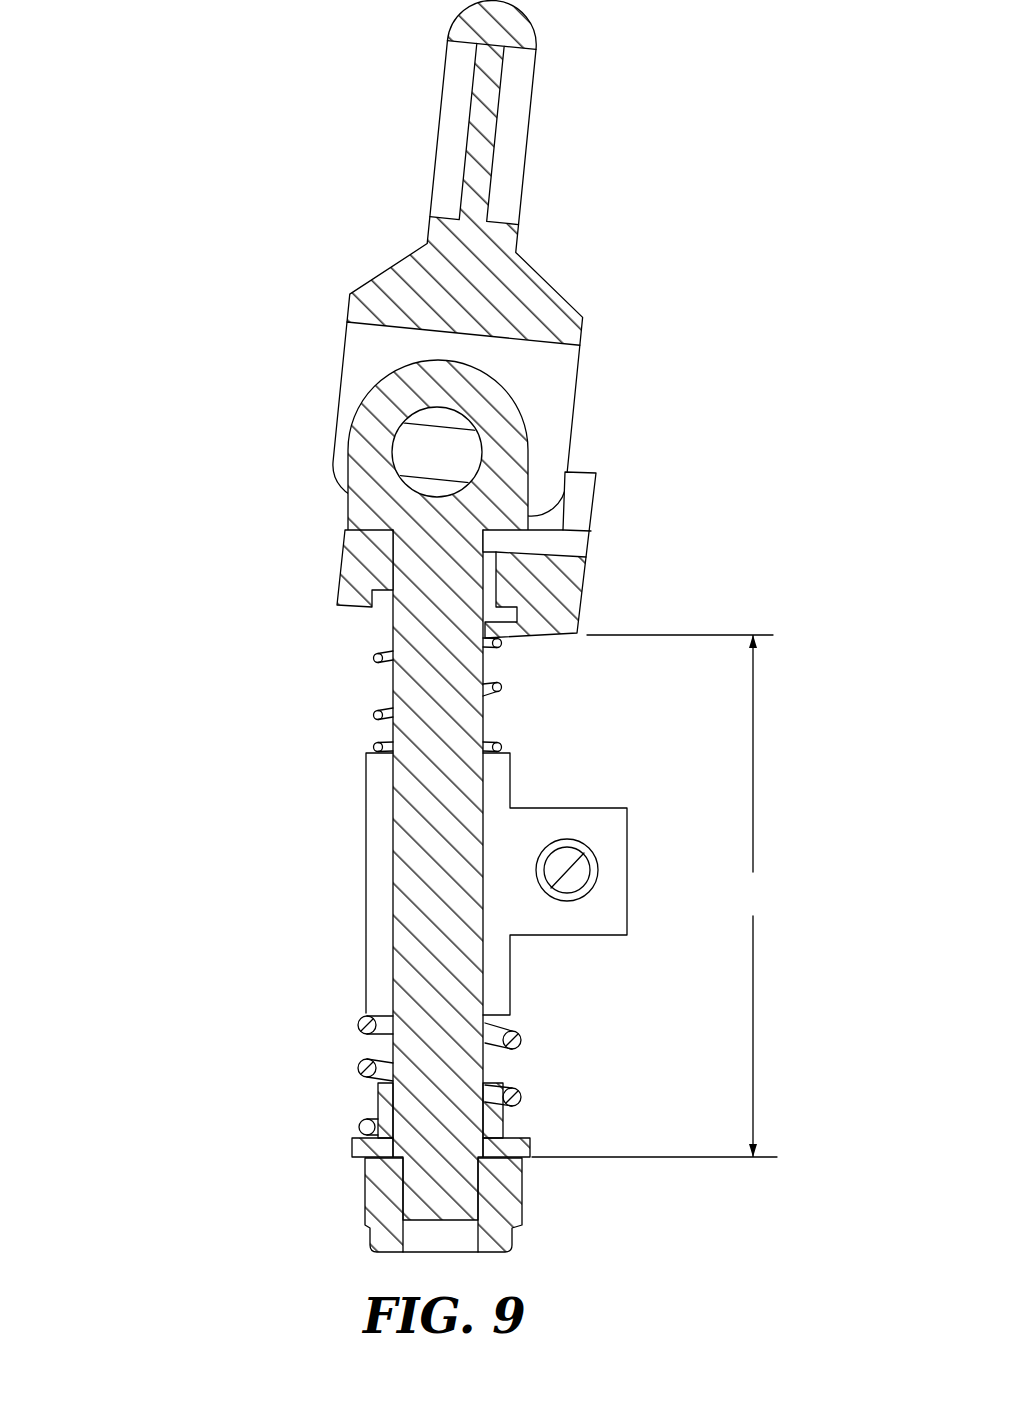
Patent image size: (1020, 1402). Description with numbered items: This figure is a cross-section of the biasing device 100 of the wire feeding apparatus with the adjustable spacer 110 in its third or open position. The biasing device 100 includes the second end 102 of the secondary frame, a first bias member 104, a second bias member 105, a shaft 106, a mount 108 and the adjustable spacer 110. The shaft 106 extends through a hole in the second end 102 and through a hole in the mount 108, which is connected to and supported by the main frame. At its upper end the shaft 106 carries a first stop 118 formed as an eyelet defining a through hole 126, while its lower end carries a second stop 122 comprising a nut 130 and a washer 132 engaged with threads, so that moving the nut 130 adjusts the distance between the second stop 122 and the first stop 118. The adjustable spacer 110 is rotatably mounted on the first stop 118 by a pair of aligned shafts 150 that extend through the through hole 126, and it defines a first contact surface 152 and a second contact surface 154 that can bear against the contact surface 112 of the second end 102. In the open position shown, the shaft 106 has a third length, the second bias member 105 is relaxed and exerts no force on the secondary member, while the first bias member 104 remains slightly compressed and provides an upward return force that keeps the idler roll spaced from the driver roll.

The biasing device 100 is at (202, 368).
The second end 102 is at (593, 610).
The first bias member 104 is at (497, 643).
The second bias member 105 is at (523, 1040).
The shaft 106 is at (483, 723).
The mount 108 is at (567, 808).
The adjustable spacer 110 is at (486, 194).
The contact surface 112 is at (565, 522).
The first stop 118 is at (464, 445).
The second stop 122 is at (455, 887).
The through hole 126 is at (453, 442).
The nut 130 is at (365, 1202).
The washer 132 is at (352, 1150).
The shafts 150 is at (437, 407).
The first contact surface 152 is at (583, 368).
The second contact surface 154 is at (333, 338).